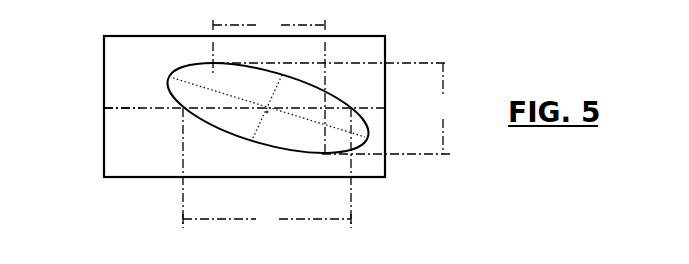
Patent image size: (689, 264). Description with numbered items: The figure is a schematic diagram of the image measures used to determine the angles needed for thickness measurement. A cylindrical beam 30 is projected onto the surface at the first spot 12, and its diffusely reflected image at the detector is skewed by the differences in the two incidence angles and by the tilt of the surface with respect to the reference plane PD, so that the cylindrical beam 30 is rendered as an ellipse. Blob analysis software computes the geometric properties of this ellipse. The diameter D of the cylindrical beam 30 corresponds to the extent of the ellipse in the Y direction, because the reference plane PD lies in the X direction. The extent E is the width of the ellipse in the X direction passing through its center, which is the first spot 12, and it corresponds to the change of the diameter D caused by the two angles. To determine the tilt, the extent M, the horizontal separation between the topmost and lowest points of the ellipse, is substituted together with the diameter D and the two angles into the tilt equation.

The cylindrical beam 30 is at (177, 72).
The first spot 12 is at (267, 112).
The extent of the ellipse in the p_D direction M is at (269, 25).
The extent of the ellipse in the X direction E is at (267, 219).
The diameter of the cylindrical beam D is at (443, 108).
The reference plane p_D PD is at (95, 131).